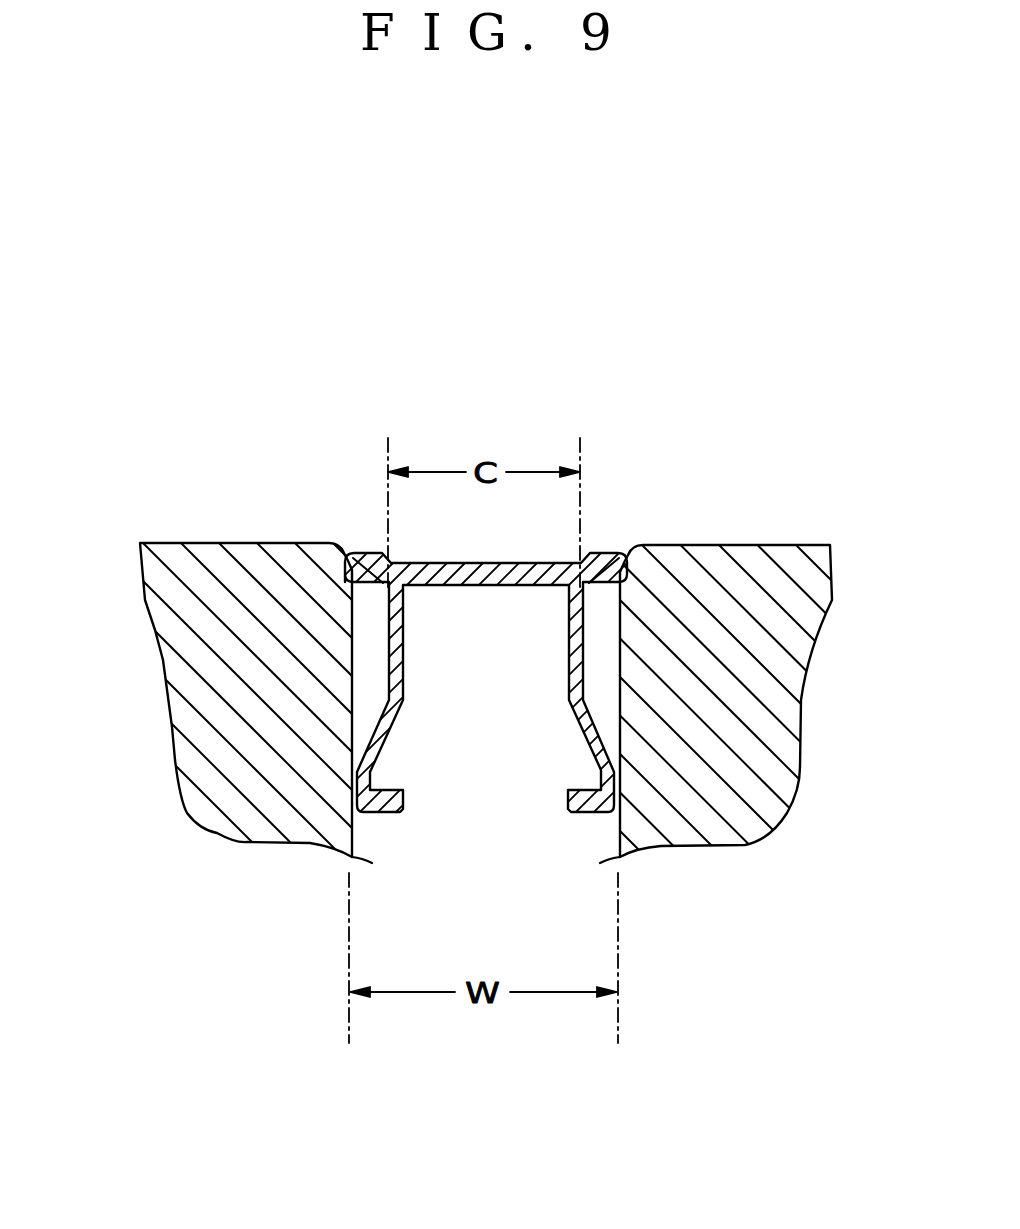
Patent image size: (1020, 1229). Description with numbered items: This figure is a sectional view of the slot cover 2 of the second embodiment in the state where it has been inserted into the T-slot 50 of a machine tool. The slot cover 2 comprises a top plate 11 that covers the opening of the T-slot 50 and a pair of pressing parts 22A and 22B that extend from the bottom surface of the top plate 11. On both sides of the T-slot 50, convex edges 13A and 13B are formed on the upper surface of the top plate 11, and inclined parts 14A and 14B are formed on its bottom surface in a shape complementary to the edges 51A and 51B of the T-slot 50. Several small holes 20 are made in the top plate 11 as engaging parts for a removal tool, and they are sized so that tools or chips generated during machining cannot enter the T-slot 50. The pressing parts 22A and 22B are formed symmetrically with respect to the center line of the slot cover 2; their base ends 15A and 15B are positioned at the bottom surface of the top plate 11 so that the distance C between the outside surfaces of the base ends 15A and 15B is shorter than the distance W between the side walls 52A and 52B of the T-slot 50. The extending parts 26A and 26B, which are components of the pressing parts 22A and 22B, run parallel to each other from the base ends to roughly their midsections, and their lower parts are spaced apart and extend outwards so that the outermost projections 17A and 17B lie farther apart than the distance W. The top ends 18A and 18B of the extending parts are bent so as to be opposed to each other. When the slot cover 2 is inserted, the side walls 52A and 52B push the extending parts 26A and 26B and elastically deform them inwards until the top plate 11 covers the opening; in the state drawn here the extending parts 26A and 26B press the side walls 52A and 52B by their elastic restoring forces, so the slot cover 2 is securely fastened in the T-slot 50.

The slot cover 2 is at (705, 328).
The top plate 11 is at (433, 575).
The small holes 20 is at (485, 575).
The convex edge 13A is at (365, 553).
The convex edge 13B is at (607, 553).
The edge of the T-slot 51A is at (345, 553).
The edge of the T-slot 51B is at (627, 553).
The inclined part 14A is at (352, 590).
The inclined part 14B is at (620, 588).
The base end 15A is at (352, 618).
The base end 15B is at (620, 618).
The extending part 26A is at (352, 655).
The extending part 26B is at (620, 655).
The pressing part 22A is at (141, 445).
The pressing part 22B is at (830, 447).
The T-slot 50 is at (518, 713).
The side wall 52A is at (356, 722).
The side wall 52B is at (620, 728).
The outermost projection 17A is at (351, 777).
The outermost projection 17B is at (620, 777).
The top end 18A is at (385, 803).
The top end 18B is at (586, 803).